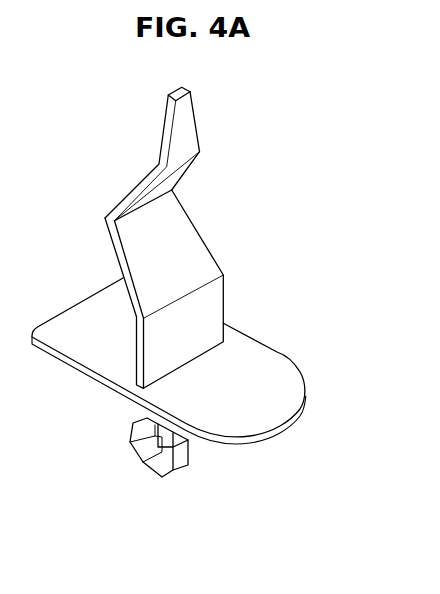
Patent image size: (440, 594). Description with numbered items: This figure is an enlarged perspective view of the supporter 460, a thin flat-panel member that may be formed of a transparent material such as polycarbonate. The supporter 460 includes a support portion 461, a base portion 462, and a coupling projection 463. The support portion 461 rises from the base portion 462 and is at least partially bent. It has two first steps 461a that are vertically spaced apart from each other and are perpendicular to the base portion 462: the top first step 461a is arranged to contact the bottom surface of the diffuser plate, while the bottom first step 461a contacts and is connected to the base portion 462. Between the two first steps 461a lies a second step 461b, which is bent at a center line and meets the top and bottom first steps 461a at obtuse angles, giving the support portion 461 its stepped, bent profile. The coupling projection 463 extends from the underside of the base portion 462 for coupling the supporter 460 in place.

The supporter 460 is at (56, 104).
The support portion 461 is at (305, 142).
The first step 461a is at (183, 132).
The second step 461b is at (168, 180).
The base portion 462 is at (270, 362).
The coupling projection 463 is at (152, 463).